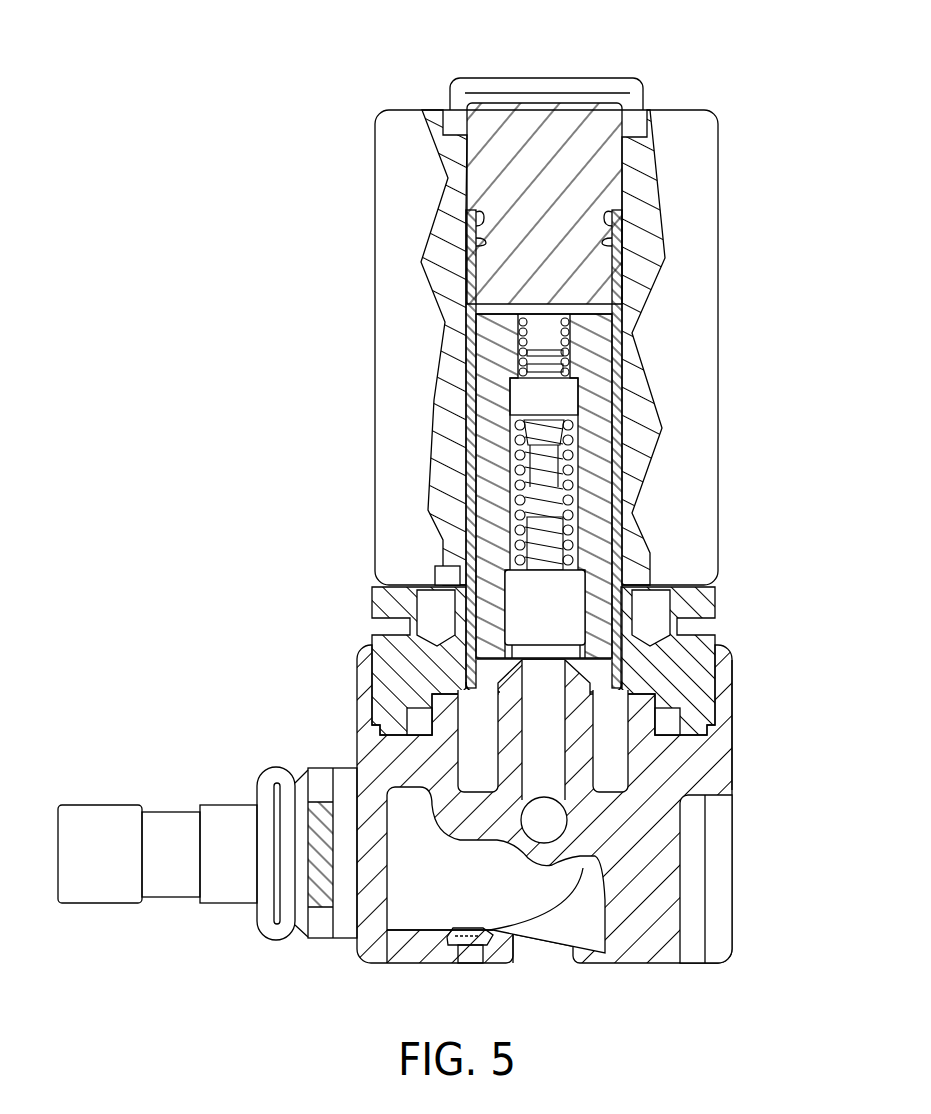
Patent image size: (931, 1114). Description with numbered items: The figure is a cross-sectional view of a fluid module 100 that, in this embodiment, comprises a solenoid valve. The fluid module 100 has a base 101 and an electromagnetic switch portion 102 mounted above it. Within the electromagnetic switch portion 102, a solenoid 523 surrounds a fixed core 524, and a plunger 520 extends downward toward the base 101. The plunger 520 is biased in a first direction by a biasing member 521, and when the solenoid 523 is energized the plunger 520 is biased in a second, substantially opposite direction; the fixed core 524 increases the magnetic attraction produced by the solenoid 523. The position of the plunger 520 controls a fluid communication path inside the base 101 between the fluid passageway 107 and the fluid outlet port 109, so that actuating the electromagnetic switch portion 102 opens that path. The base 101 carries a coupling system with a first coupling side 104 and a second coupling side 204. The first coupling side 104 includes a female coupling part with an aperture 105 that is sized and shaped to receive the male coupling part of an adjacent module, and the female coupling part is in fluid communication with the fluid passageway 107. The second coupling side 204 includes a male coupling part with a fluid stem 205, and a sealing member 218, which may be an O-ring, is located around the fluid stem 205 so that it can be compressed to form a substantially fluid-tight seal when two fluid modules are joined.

The fluid module 100 is at (278, 94).
The electromagnetic switch portion 102 is at (393, 309).
The solenoid 523 is at (384, 231).
The fixed core 524 is at (597, 183).
The biasing member 521 is at (518, 477).
The plunger 520 is at (508, 598).
The second coupling side 204 is at (357, 692).
The base 101 is at (367, 762).
The fluid passageway 107 is at (613, 755).
The fluid outlet port 109 is at (537, 828).
The aperture 105 is at (739, 972).
The first coupling side 104 is at (730, 714).
The sealing member 218 is at (262, 782).
The fluid stem 205 is at (100, 895).